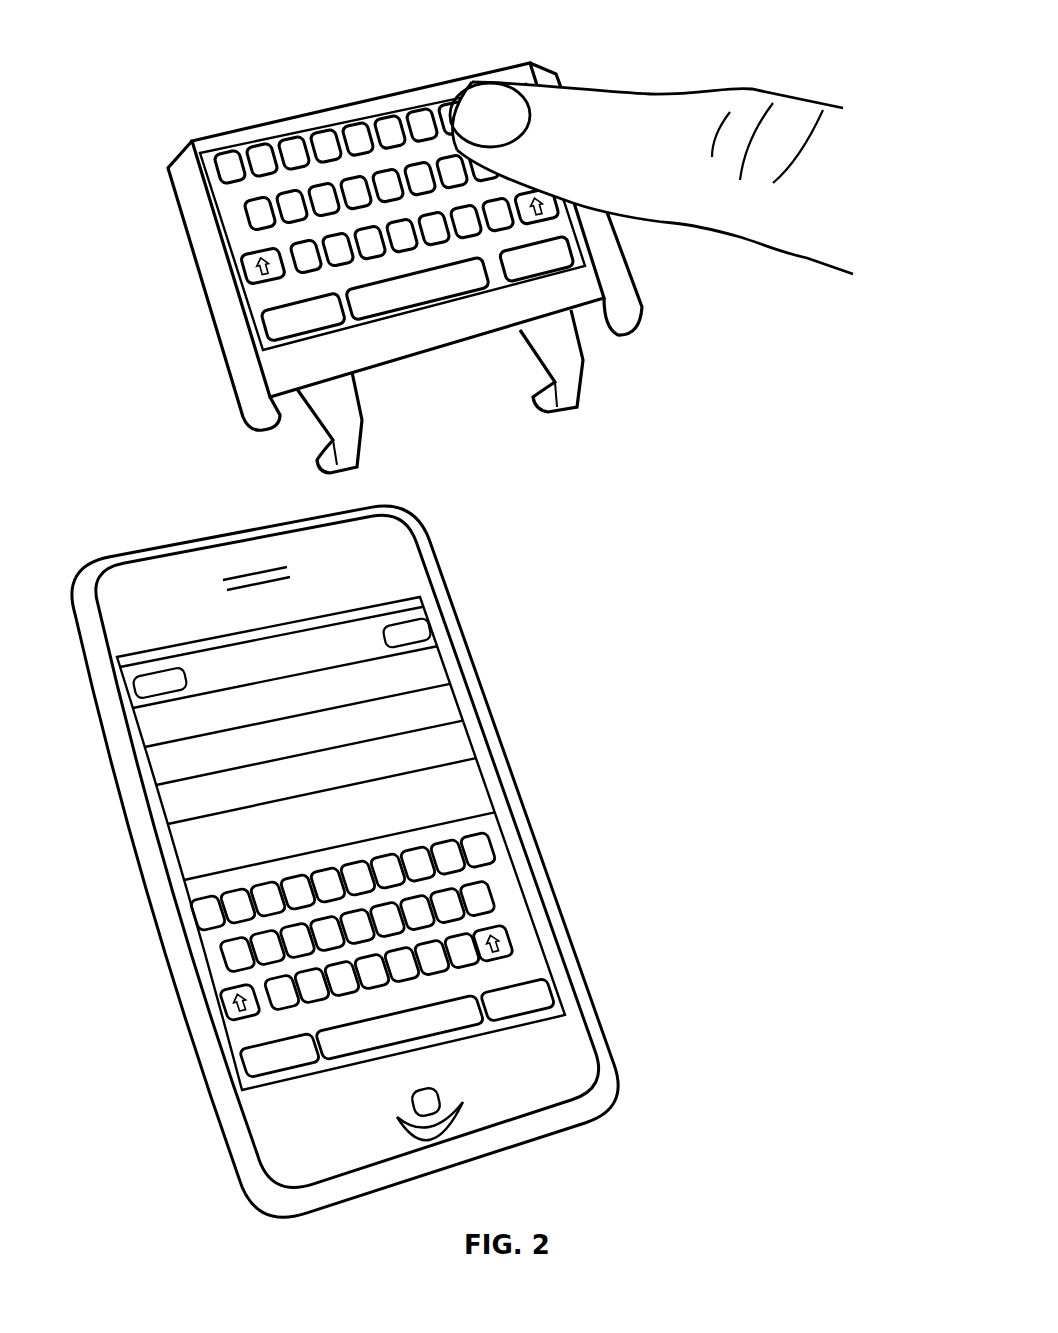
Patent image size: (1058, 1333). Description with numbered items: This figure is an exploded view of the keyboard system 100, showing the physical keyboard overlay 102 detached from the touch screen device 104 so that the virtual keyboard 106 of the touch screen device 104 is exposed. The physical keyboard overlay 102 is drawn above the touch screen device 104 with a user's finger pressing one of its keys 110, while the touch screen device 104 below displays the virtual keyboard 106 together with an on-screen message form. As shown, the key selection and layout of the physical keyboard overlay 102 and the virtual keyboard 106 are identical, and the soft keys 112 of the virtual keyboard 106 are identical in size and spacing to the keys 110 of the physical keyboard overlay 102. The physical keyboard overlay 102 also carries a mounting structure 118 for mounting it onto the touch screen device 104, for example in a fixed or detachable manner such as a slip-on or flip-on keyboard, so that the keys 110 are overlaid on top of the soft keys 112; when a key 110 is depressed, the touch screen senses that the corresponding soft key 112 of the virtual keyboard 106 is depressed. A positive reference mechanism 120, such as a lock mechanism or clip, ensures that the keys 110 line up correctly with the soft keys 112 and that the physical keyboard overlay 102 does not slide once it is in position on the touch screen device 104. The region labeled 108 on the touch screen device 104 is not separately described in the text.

The keyboard system 100 is at (818, 40).
The physical keyboard overlay 102 is at (559, 40).
The touch screen device 104 is at (523, 652).
The virtual keyboard 106 is at (418, 850).
The virtual keyboard 108 is at (195, 880).
The keys of the physical keyboard overlay 110 is at (247, 220).
The soft keys 112 is at (228, 958).
The mounting structure 118 is at (313, 424).
The positive reference mechanism 120 is at (542, 404).